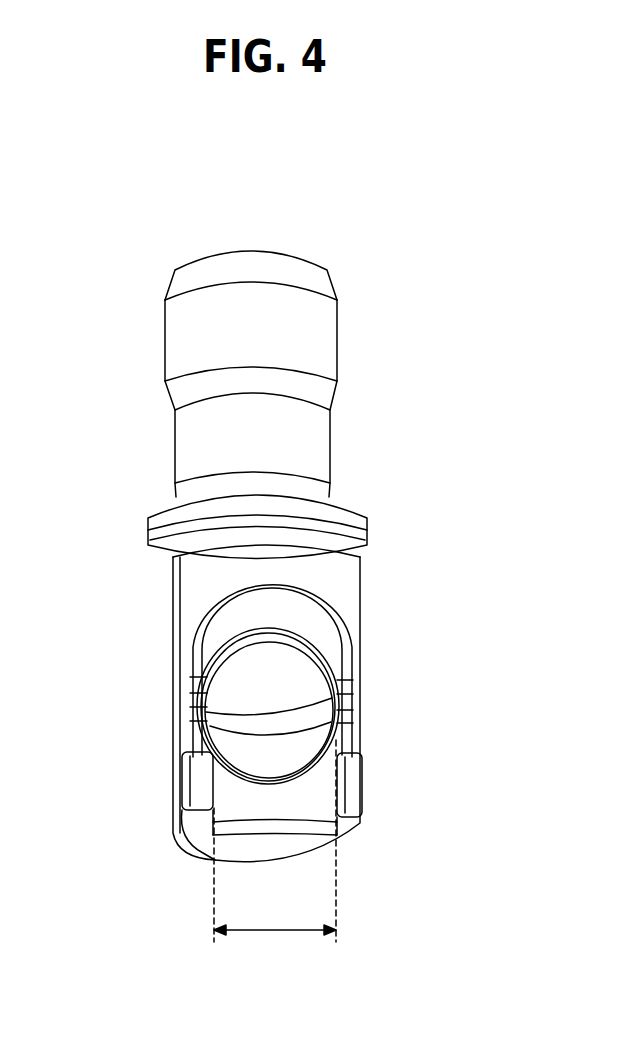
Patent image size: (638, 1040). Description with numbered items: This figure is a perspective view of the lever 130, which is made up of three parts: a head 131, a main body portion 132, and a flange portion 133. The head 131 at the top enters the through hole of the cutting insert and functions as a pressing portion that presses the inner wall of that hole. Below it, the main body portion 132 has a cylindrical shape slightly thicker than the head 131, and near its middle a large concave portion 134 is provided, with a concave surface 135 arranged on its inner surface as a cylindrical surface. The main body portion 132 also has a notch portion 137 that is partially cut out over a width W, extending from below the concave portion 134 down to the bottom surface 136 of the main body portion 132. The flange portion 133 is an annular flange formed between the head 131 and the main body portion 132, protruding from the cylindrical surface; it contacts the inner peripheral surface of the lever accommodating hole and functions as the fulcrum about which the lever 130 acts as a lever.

The lever 130 is at (124, 201).
The head 131 is at (448, 273).
The main body portion 132 is at (295, 768).
The flange portion 133 is at (448, 500).
The concave portion 134 is at (250, 672).
The concave surface 135 is at (250, 727).
The bottom surface 136 is at (195, 840).
The notch portion 137 is at (307, 855).